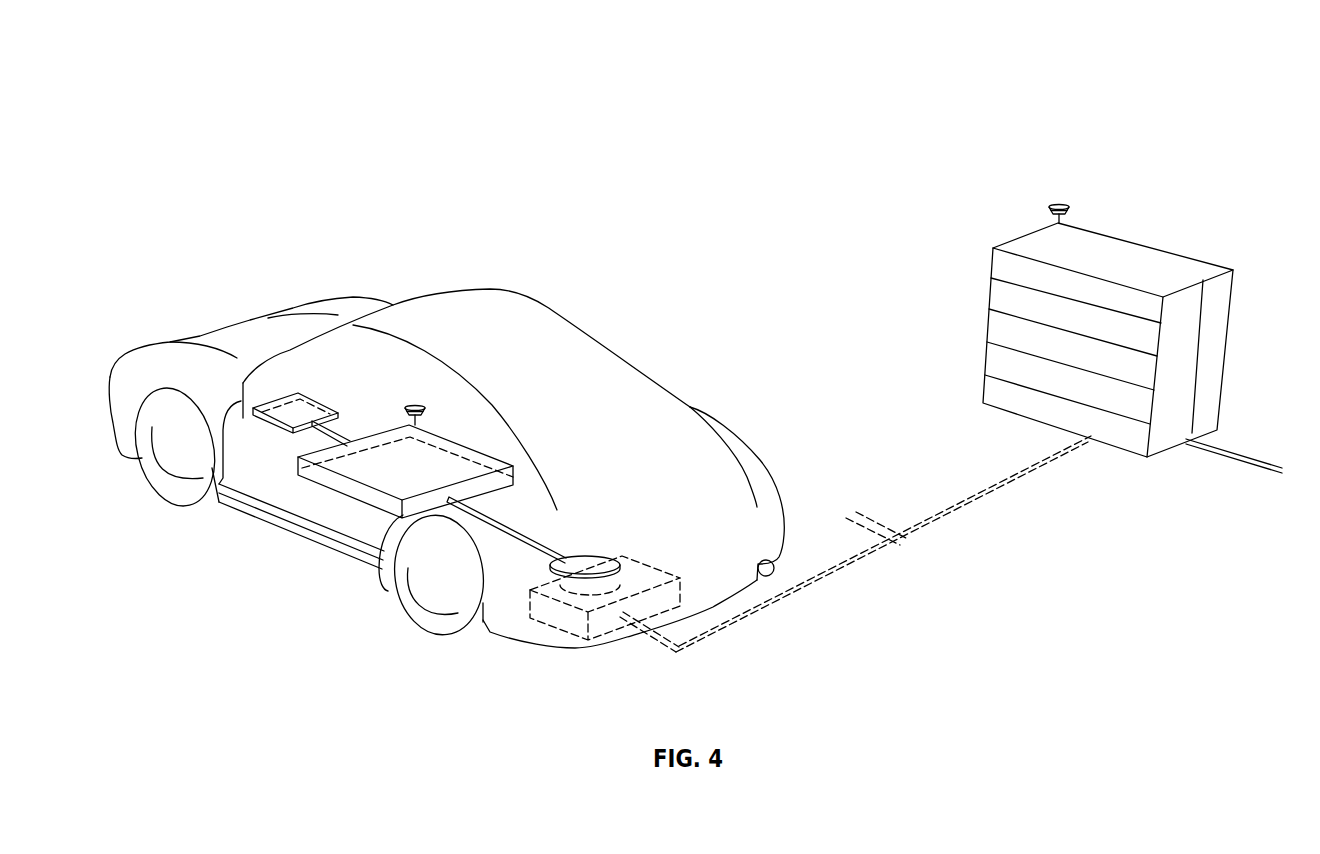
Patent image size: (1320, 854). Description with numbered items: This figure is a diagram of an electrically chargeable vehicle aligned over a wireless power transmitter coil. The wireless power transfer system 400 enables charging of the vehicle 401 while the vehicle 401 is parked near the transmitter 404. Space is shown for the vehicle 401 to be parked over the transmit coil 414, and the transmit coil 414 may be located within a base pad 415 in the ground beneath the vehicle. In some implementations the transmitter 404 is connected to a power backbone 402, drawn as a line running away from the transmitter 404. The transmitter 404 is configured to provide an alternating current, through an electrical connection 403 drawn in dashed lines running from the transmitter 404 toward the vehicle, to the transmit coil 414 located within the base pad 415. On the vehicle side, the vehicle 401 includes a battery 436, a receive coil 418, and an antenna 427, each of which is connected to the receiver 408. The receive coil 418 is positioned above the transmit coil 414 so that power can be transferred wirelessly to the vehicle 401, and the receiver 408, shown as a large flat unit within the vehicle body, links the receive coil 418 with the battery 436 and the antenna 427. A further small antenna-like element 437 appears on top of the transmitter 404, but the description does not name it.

The wireless power transfer system 400 is at (436, 137).
The vehicle 401 is at (230, 323).
The power backbone 402 is at (1247, 467).
The electrical connection 403 is at (985, 507).
The transmitter 404 is at (1030, 238).
The receiver 408 is at (305, 455).
The transmit coil 414 is at (658, 540).
The base pad 415 is at (683, 568).
The receive coil 418 is at (583, 557).
The antenna 427 is at (416, 406).
The battery 436 is at (318, 400).
The station antenna 437 is at (1060, 205).